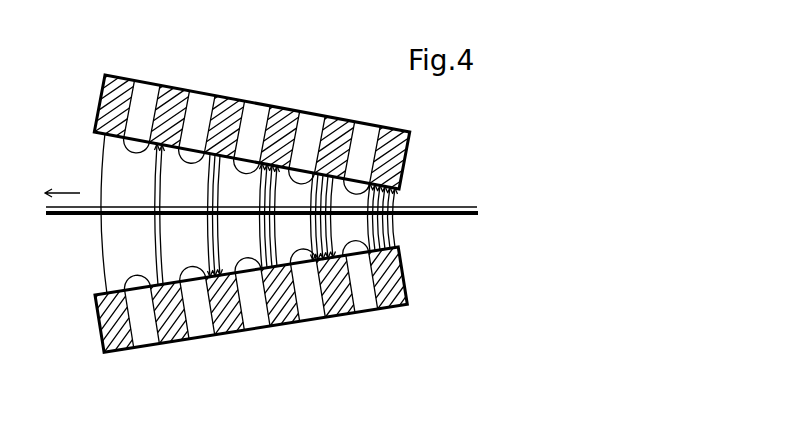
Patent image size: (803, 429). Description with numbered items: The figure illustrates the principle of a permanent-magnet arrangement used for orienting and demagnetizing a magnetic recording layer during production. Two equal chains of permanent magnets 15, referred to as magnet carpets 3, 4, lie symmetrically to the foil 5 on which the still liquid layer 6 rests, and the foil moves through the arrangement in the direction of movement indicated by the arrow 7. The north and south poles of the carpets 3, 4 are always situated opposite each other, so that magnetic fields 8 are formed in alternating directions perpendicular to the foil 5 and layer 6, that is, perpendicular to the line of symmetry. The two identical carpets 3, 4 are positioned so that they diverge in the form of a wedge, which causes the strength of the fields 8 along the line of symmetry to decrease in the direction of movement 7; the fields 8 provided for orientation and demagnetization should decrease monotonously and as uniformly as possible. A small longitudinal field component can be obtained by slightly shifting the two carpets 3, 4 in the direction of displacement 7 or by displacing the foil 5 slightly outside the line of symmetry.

The magnet carpet 3 is at (407, 152).
The magnet carpet 4 is at (398, 273).
The foil 5 is at (478, 214).
The still liquid layer 6 is at (417, 207).
The direction of movement 7 is at (73, 190).
The magnetic fields 8 is at (102, 240).
The permanent magnets 15 is at (402, 131).